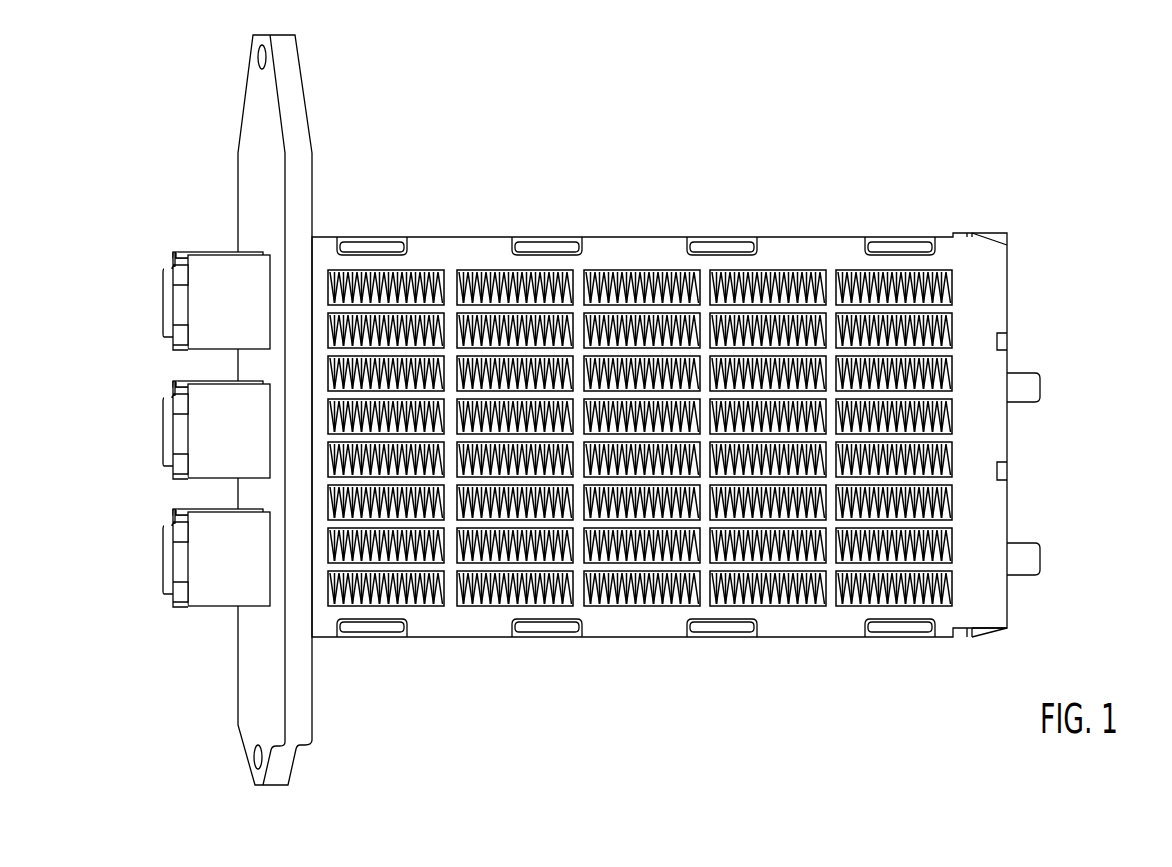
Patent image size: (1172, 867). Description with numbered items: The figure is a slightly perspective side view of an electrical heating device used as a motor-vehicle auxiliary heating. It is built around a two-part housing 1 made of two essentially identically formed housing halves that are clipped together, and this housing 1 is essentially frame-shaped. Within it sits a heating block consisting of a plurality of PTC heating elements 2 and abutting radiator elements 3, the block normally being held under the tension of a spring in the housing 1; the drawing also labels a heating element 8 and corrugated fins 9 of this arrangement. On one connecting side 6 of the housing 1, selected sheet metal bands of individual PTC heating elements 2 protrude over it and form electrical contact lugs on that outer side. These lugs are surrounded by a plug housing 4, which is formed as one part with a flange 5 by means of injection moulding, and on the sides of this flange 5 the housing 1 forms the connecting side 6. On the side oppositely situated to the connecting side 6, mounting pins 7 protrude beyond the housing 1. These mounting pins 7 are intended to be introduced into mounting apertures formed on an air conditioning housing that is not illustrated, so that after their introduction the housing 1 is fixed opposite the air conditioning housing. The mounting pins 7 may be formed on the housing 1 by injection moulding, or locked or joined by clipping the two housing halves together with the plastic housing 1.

The housing 1 is at (622, 410).
The PTC heating elements 2 is at (694, 380).
The radiator elements 3 is at (952, 368).
The plug housing 4 is at (203, 242).
The flange 5 is at (300, 693).
The connecting side 6 is at (317, 230).
The mounting pins 7 is at (1040, 382).
The heating element 8 is at (650, 269).
The corrugated fins 9 is at (595, 290).